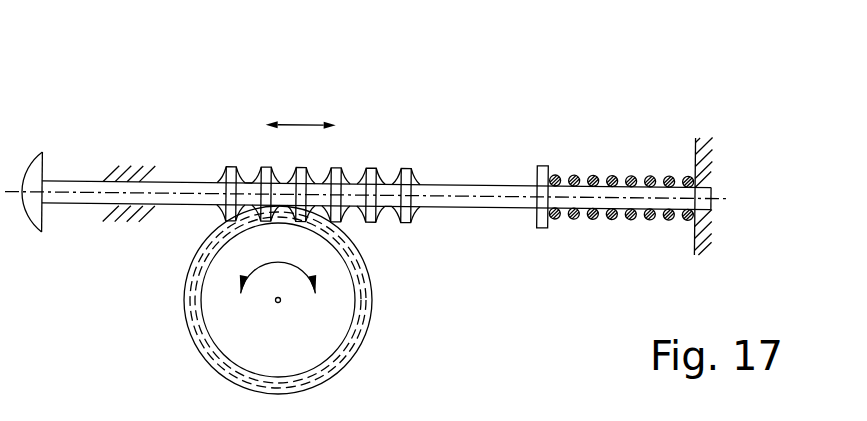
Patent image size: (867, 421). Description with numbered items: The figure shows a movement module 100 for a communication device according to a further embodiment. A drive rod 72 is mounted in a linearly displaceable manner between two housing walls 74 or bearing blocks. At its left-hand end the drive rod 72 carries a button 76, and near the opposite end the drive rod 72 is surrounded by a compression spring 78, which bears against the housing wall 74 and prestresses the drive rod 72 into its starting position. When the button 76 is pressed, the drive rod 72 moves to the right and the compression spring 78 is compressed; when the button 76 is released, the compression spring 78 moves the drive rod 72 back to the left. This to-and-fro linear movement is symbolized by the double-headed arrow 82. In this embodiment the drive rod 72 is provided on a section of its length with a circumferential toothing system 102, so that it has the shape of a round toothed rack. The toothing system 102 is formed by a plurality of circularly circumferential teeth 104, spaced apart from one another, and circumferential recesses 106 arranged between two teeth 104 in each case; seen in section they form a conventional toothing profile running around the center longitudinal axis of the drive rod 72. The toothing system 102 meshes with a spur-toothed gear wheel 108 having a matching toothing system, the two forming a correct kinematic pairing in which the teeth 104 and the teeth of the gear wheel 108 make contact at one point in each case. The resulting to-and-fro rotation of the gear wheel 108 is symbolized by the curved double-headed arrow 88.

The drive rod 72 is at (447, 181).
The housing wall 74 is at (138, 165).
The button 76 is at (36, 166).
The compression spring 78 is at (595, 169).
The double-headed arrow 82 is at (310, 122).
The curved double-headed arrow 88 is at (262, 263).
The movement module 100 is at (490, 128).
The circumferential toothing system 102 is at (355, 160).
The teeth 104 is at (229, 164).
The circumferential recesses 106 is at (253, 178).
The gear wheel 108 is at (338, 330).